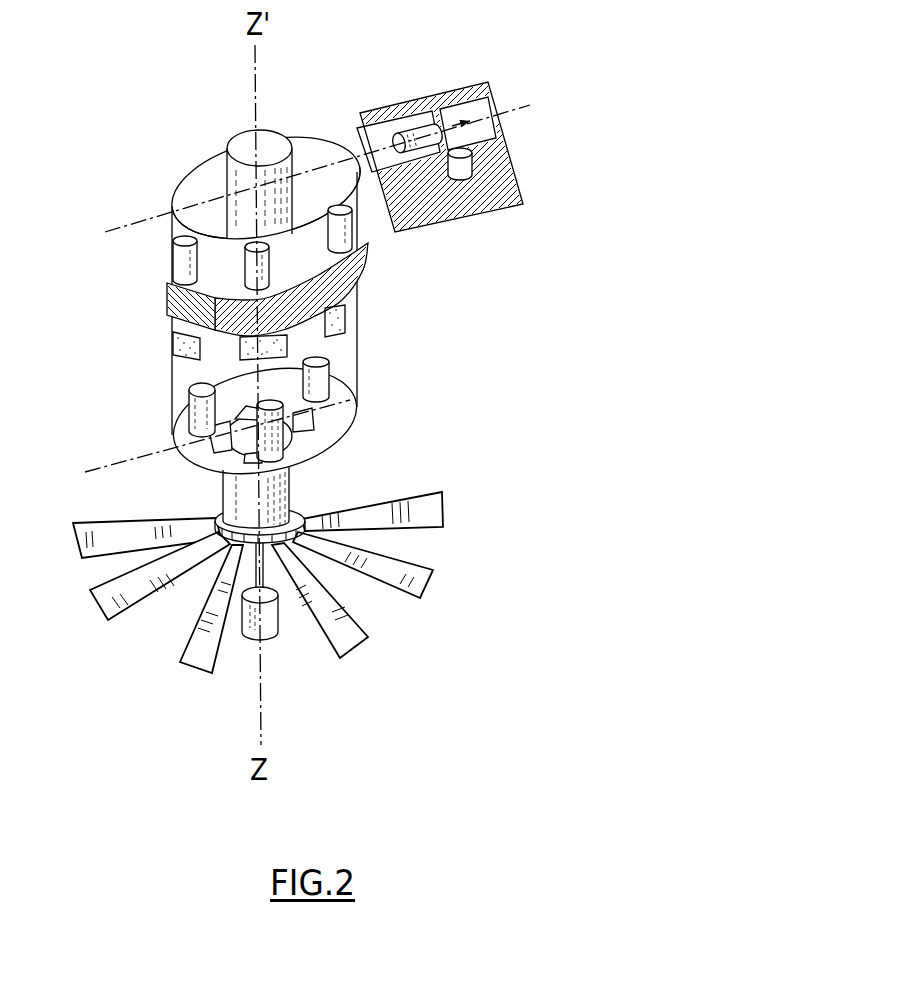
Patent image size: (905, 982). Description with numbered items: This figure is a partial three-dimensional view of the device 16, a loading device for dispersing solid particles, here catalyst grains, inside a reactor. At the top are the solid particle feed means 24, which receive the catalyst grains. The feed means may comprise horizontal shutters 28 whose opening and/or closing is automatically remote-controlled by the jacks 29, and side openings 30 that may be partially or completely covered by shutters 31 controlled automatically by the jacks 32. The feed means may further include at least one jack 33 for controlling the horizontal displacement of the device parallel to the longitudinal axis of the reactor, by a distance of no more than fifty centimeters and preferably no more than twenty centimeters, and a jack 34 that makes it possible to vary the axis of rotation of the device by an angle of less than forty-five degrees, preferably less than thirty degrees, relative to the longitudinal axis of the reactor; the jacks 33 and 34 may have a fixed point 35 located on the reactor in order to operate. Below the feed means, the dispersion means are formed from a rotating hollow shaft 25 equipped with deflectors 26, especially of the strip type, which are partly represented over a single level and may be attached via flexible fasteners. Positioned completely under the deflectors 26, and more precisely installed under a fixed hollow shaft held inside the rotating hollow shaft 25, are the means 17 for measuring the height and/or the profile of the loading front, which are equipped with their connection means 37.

The device 16 is at (545, 542).
The means for measuring the height and/or profile of the loading front 17 is at (255, 625).
The solid particle feed means 24 is at (187, 405).
The rotating hollow shaft 25 is at (248, 485).
The deflectors 26 is at (92, 613).
The horizontal shutters 28 is at (292, 451).
The jacks 29 is at (282, 403).
The side openings 30 is at (272, 346).
The shutters 31 is at (280, 311).
The jacks 32 is at (272, 264).
The jack 33 is at (406, 120).
The jack 34 is at (478, 162).
The fixed point 35 is at (500, 188).
The connection means 37 is at (270, 568).